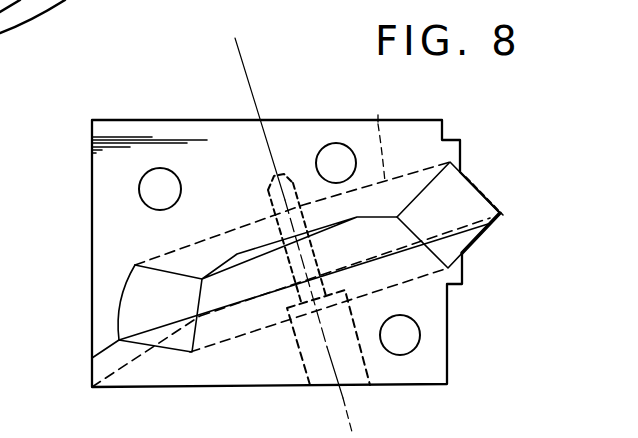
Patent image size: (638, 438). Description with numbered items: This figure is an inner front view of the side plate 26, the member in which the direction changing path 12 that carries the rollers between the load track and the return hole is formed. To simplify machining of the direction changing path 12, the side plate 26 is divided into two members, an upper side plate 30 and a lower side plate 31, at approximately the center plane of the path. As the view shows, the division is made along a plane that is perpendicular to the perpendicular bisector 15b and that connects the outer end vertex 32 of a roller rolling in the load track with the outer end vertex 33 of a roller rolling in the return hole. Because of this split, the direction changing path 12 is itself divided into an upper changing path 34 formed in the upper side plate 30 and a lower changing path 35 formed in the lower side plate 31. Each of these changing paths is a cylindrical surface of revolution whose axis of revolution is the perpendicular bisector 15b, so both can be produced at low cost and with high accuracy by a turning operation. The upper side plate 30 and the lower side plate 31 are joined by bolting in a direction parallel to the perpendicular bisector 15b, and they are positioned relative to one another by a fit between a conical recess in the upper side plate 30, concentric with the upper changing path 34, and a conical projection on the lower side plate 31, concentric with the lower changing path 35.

The perpendicular bisector 15b is at (252, 68).
The direction changing path 12 is at (384, 137).
The upper side plate 30 is at (427, 130).
The upper changing path 34 is at (463, 193).
The outer end vertex of roller rolling in load track 32 is at (504, 212).
The side plate 26 is at (477, 275).
The lower side plate 31 is at (421, 338).
The outer end vertex of roller rolling in return hole 33 is at (118, 340).
The lower changing path 35 is at (179, 348).